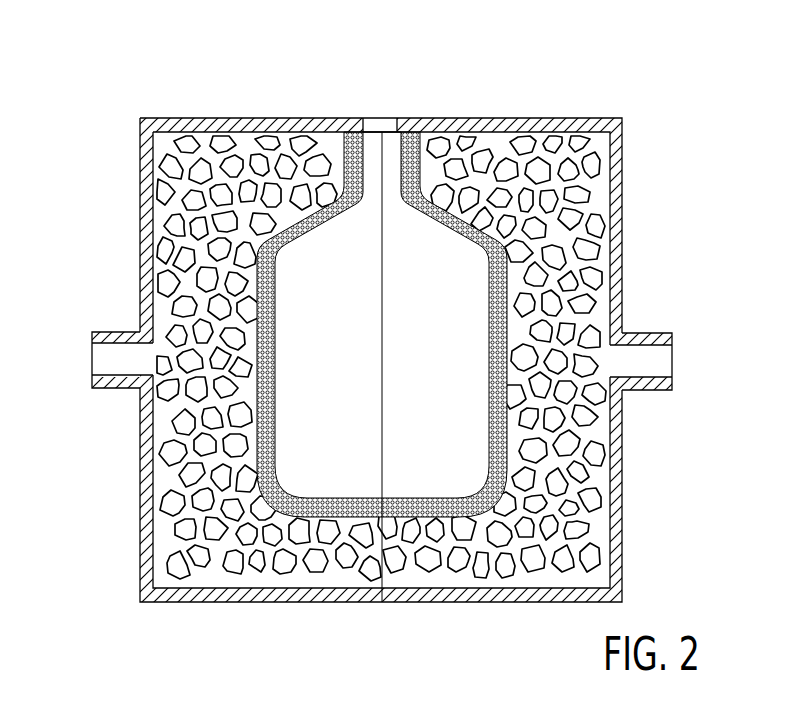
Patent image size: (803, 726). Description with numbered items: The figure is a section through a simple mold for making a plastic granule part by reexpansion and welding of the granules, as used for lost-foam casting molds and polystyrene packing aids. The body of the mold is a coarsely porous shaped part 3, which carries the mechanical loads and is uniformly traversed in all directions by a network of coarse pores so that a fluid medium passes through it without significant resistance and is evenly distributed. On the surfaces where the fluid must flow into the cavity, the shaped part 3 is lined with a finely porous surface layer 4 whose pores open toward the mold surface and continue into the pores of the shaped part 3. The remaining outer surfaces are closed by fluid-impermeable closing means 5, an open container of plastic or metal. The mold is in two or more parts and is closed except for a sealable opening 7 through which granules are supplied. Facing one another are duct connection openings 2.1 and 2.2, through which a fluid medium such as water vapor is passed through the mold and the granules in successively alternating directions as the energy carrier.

The duct connection opening 2.1 is at (93, 351).
The duct connection opening 2.2 is at (672, 360).
The coarsely porous shaped part 3 is at (163, 182).
The finely porous surface layer 4 is at (277, 304).
The fluid-impermeable closing means 5 is at (140, 470).
The sealable opening 7 is at (372, 118).